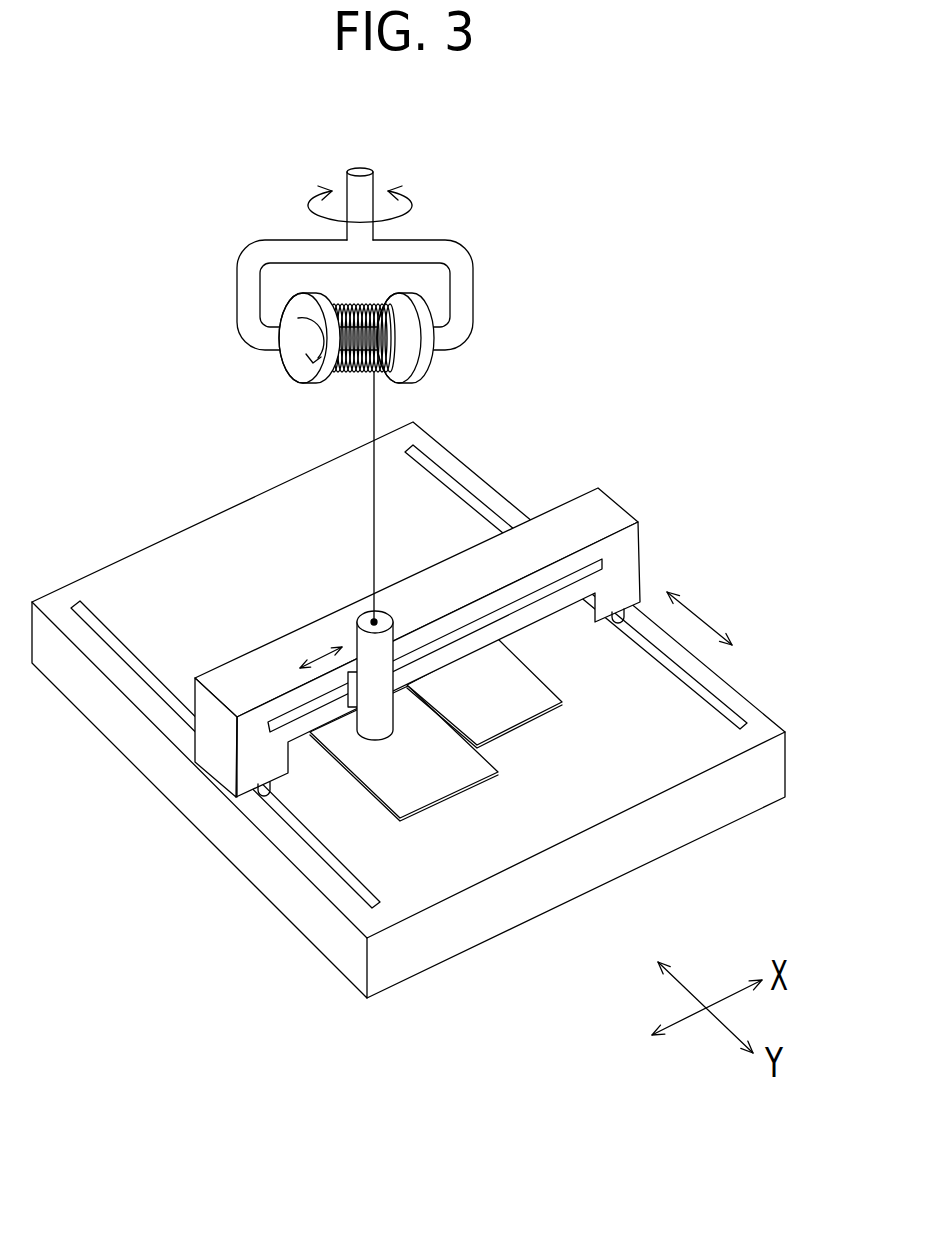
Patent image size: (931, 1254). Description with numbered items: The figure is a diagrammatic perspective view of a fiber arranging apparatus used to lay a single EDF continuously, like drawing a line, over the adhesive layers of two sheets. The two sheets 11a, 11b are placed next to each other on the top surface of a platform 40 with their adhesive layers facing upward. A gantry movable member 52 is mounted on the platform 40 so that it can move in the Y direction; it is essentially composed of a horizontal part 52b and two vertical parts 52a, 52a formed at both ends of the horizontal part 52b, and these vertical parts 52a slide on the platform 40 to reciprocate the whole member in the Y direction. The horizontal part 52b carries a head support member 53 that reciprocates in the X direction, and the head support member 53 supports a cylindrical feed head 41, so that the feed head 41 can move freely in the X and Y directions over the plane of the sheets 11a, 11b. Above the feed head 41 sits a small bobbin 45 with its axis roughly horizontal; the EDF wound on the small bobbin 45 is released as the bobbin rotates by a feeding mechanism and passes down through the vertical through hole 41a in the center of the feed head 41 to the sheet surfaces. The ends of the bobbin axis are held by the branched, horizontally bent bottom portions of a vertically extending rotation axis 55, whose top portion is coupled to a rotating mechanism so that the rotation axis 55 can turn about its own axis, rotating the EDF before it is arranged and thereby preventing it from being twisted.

The platform 40 is at (432, 945).
The sheet 11a is at (423, 790).
The sheet 11b is at (508, 710).
The gantry movable member 52 is at (432, 636).
The horizontal part 52b is at (560, 518).
The vertical part 52a is at (218, 757).
The head support member 53 is at (347, 680).
The feed head 41 is at (357, 622).
The through hole 41a is at (365, 612).
The element EDF is at (373, 412).
The small bobbin 45 is at (262, 372).
The rotation axis 55 is at (373, 193).